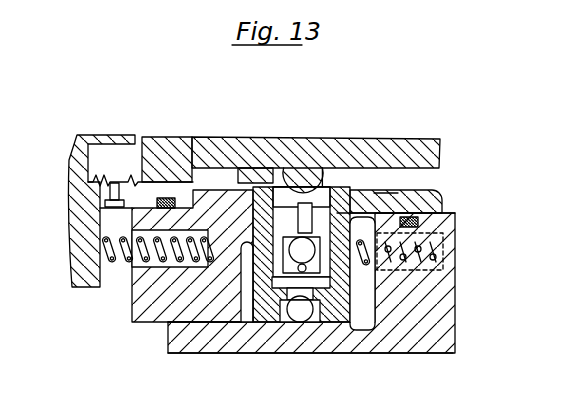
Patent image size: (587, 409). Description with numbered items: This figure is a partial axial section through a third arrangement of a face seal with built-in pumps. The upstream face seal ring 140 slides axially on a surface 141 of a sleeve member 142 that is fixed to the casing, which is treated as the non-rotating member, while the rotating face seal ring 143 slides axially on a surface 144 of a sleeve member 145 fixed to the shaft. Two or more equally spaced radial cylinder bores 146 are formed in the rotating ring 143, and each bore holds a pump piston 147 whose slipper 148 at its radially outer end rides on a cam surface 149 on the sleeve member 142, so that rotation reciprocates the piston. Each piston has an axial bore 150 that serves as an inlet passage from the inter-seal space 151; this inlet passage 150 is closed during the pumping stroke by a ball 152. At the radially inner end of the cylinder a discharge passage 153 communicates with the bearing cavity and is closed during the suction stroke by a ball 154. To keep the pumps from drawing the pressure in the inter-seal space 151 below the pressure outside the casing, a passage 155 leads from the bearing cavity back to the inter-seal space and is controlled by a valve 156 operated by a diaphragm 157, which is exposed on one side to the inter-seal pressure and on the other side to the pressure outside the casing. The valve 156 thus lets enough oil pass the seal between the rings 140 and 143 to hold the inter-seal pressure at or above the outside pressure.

The upstream face seal ring 140 is at (140, 283).
The surface 141 is at (108, 212).
The sleeve member 142 is at (441, 154).
The rotating face seal ring 143 is at (440, 207).
The surface 144 is at (455, 216).
The sleeve member 145 is at (432, 324).
The radial cylinder bores 146 is at (338, 312).
The pump piston 147 is at (336, 212).
The slipper 148 is at (316, 182).
The cam surface 149 is at (304, 212).
The axial bore 150 is at (289, 195).
The inter-seal space 151 is at (389, 185).
The ball 152 is at (252, 213).
The discharge passage 153 is at (245, 326).
The ball 154 is at (304, 316).
The passage 155 is at (178, 186).
The valve 156 is at (108, 203).
The diaphragm 157 is at (110, 181).